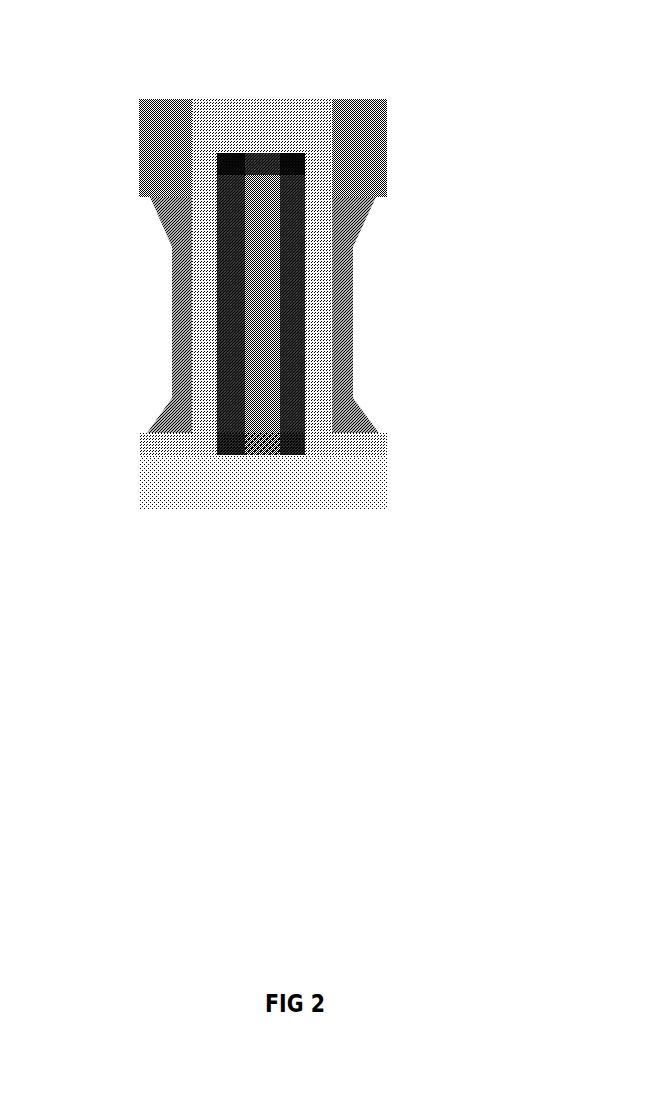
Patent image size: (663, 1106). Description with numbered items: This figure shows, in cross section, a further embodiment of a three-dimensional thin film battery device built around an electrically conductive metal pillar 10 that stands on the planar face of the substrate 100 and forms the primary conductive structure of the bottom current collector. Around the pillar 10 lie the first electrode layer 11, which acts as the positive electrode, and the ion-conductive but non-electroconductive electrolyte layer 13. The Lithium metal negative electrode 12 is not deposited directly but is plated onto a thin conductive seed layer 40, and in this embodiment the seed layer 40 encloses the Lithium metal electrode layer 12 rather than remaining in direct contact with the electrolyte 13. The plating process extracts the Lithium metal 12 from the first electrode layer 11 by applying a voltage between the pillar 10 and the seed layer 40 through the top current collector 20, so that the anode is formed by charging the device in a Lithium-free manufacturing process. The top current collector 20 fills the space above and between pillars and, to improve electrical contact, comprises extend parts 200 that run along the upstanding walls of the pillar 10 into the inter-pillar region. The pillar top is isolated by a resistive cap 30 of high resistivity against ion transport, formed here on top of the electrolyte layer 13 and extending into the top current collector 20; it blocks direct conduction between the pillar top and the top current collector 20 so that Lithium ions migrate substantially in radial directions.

The extend parts 200 is at (302, 112).
The top current collector 20 is at (168, 108).
The resistive layer 30 is at (277, 155).
The seed layer 40 is at (173, 293).
The electrolyte layer 13 is at (210, 398).
The negative electrode 12 is at (340, 372).
The first electrode layer 11 is at (243, 173).
The pillar 10 is at (272, 303).
The substrate 100 is at (385, 482).